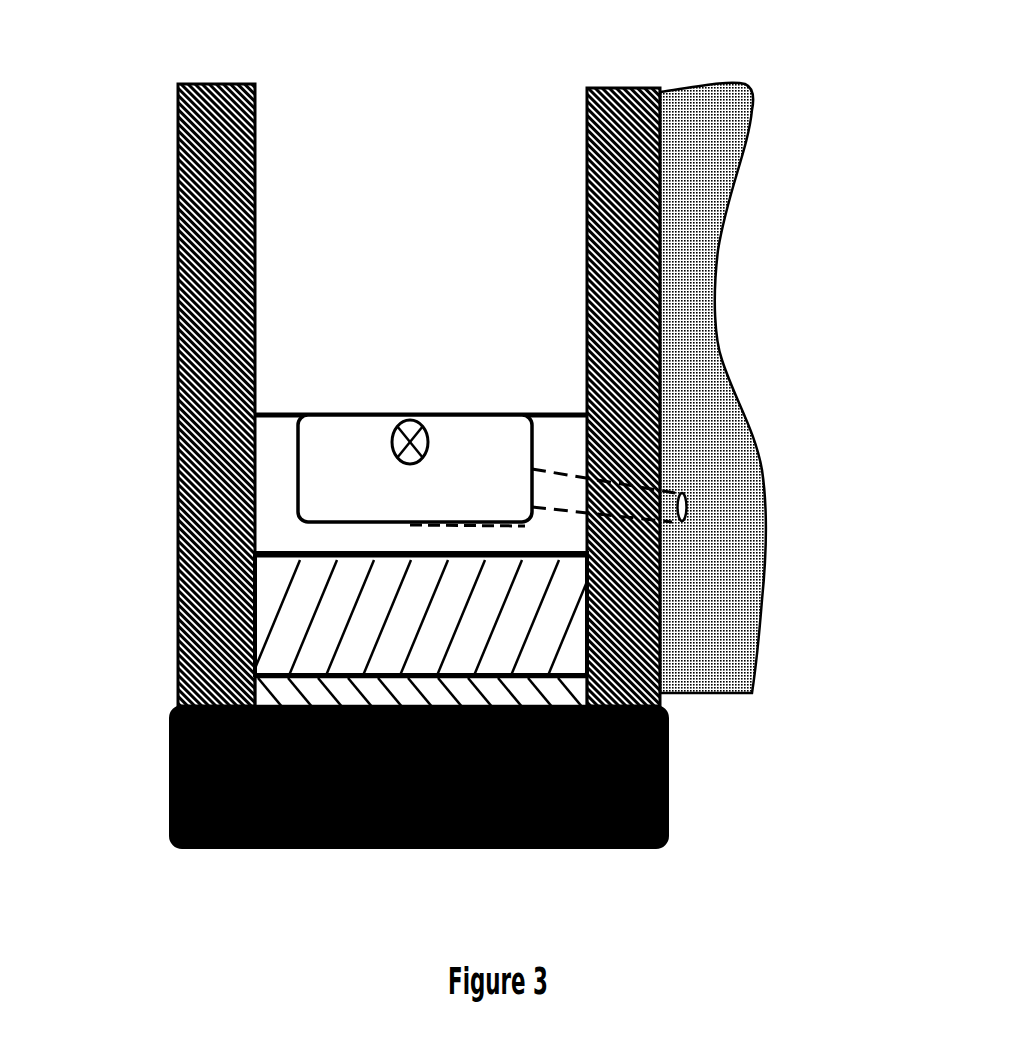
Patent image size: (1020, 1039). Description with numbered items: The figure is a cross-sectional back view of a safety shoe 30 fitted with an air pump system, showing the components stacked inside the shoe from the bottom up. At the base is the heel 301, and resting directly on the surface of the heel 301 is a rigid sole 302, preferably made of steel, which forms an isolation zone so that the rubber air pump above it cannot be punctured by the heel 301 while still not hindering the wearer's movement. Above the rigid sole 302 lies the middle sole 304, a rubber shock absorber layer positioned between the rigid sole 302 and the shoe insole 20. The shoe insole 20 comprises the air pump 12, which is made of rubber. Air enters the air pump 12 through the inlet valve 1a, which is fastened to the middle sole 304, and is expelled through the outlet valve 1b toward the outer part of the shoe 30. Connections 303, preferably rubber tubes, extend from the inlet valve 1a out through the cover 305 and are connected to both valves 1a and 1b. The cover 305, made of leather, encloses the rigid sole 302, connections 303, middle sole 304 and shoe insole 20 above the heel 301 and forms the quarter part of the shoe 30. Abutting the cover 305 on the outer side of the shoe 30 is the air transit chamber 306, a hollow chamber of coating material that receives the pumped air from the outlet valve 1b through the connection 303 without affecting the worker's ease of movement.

The shoe 30 is at (92, 68).
The inlet valve 1a is at (609, 232).
The cover 305 is at (620, 167).
The air transit chamber 306 is at (688, 322).
The air pump 12 is at (328, 443).
The shoe insole 20 is at (280, 520).
The connections 303 is at (585, 477).
The outlet valve 1b is at (688, 508).
The middle sole 304 is at (580, 649).
The rigid sole 302 is at (568, 693).
The heel 301 is at (668, 818).